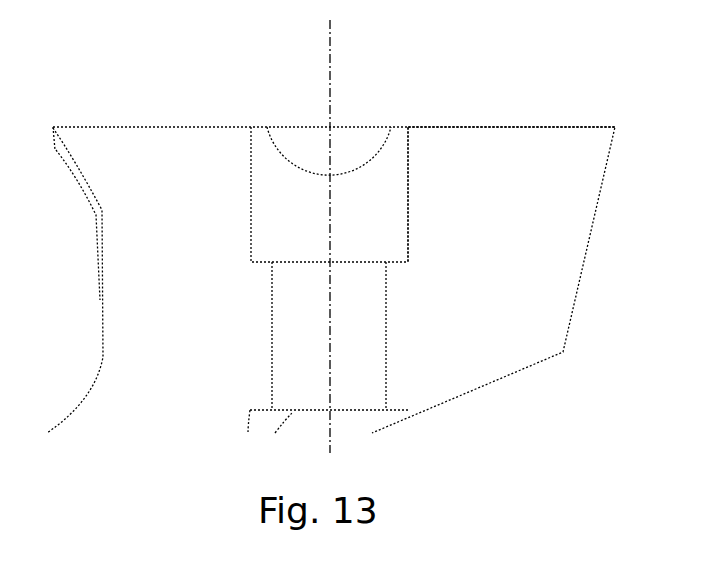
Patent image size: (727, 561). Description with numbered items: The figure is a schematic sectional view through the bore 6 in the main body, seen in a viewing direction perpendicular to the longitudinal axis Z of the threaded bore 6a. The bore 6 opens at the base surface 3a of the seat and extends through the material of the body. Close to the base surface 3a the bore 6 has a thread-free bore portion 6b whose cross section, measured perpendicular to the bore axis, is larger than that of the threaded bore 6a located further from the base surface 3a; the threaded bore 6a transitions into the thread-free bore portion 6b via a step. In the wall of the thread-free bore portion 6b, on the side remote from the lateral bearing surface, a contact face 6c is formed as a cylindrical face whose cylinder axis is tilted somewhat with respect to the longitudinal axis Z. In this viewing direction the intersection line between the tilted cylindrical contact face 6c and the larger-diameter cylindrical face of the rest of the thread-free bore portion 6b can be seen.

The longitudinal axis Z is at (330, 67).
The base surface 3a is at (527, 127).
The bore 6 is at (280, 203).
The threaded bore 6a is at (386, 337).
The thread-free bore portion 6b is at (407, 192).
The contact face 6c is at (372, 140).